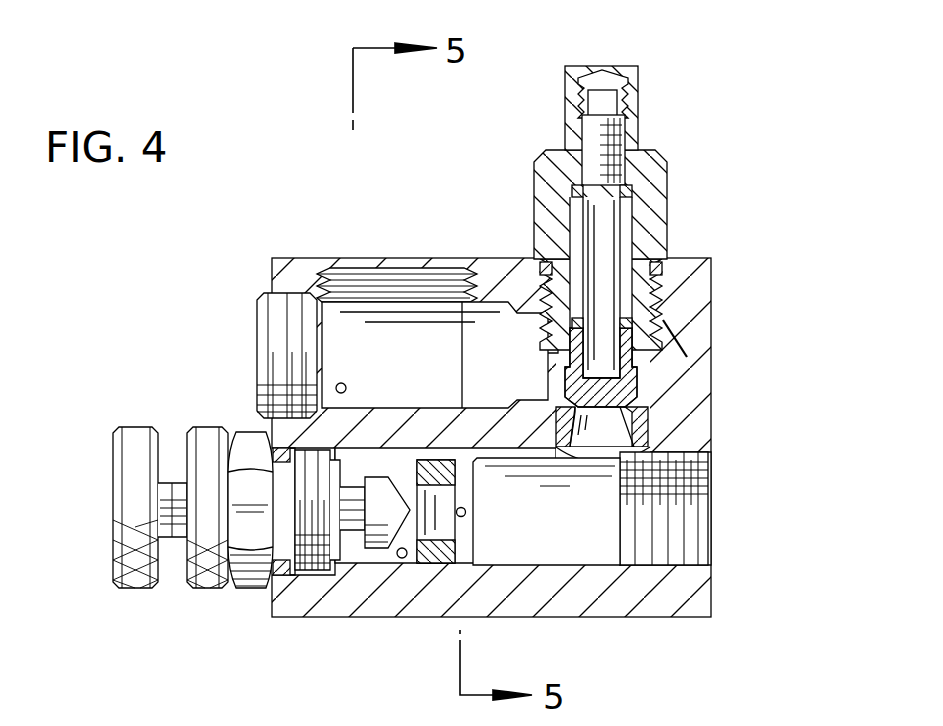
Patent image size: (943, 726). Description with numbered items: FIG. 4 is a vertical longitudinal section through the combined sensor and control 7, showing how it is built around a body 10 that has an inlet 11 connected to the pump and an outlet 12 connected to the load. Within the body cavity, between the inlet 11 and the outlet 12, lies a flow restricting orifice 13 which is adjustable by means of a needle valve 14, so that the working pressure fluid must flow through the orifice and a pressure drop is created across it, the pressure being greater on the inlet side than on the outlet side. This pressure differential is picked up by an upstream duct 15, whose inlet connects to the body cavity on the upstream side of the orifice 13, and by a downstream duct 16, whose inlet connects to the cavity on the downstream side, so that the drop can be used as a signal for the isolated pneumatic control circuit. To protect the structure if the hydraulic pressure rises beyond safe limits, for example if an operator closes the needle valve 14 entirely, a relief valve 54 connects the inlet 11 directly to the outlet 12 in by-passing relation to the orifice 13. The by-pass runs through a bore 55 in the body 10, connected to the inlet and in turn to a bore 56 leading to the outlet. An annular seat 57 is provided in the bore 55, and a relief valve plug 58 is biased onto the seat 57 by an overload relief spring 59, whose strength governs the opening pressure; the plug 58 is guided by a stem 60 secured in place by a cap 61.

The combined sensor and control 7 is at (712, 256).
The body 10 is at (640, 617).
The inlet 11 is at (690, 523).
The outlet 12 is at (440, 258).
The flow restricting orifice 13 is at (440, 545).
The needle valve 14 is at (378, 548).
The upstream duct 15 is at (466, 512).
The downstream duct 16 is at (344, 383).
The relief valve 54 is at (683, 160).
The bore 55 is at (650, 450).
The bore 56 is at (532, 332).
The annular seat 57 is at (632, 432).
The relief valve plug 58 is at (625, 398).
The overload relief spring 59 is at (570, 190).
The stem 60 is at (605, 243).
The cap 61 is at (622, 105).